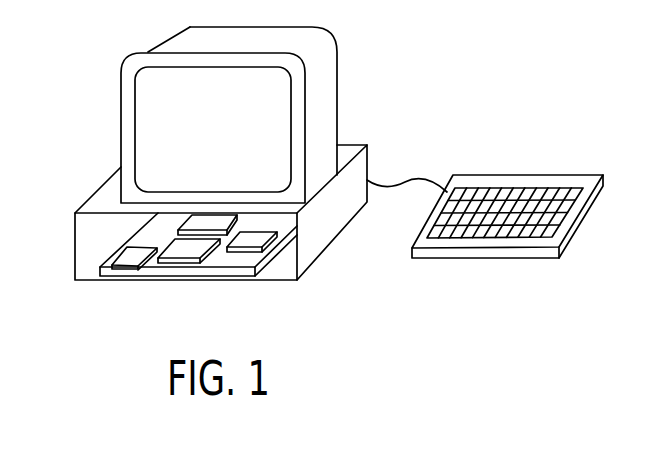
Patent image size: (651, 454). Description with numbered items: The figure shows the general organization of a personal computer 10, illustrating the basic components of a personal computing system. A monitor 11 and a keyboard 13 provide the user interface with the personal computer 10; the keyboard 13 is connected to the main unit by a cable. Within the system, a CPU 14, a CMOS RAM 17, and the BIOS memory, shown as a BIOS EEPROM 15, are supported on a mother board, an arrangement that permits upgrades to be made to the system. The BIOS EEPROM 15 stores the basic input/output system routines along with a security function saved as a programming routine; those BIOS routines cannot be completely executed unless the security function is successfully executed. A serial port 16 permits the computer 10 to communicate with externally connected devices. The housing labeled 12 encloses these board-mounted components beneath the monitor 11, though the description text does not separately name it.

The personal computer 10 is at (185, 262).
The monitor 11 is at (337, 62).
The computer housing / base unit 12 is at (108, 191).
The keyboard 13 is at (523, 255).
The CPU 14 is at (185, 223).
The BIOS EEPROM 15 is at (153, 266).
The serial port 16 is at (367, 158).
The CMOS RAM 17 is at (262, 250).